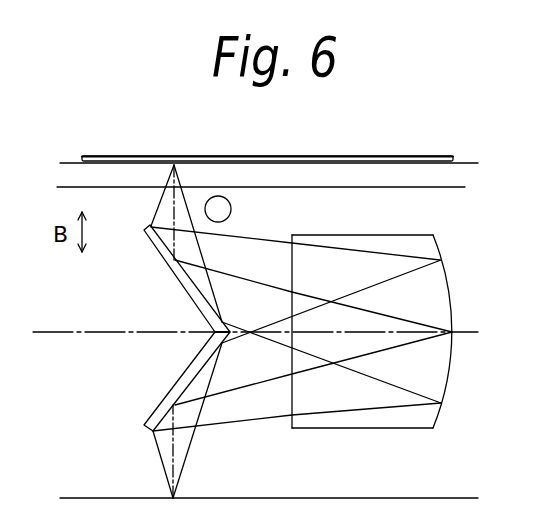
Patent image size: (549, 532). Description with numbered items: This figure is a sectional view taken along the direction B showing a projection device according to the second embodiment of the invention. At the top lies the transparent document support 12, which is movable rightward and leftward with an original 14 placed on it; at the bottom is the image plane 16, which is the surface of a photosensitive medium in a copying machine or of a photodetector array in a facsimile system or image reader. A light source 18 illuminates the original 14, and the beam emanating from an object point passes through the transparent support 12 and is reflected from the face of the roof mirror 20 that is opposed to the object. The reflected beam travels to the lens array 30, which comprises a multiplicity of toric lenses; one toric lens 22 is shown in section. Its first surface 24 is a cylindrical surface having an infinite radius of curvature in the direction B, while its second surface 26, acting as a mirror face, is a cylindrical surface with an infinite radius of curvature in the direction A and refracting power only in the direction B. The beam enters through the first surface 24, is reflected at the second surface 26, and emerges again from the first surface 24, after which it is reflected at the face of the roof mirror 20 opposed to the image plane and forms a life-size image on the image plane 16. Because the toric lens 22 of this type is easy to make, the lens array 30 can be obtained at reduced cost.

The transparent document support 12 is at (463, 178).
The original 14 is at (443, 157).
The image plane 16 is at (400, 499).
The light source 18 is at (231, 208).
The roof mirror 20 is at (158, 254).
The toric lens 22 is at (380, 337).
The first surface 24 is at (292, 238).
The second surface 26 is at (448, 275).
The lens array 30 is at (380, 333).